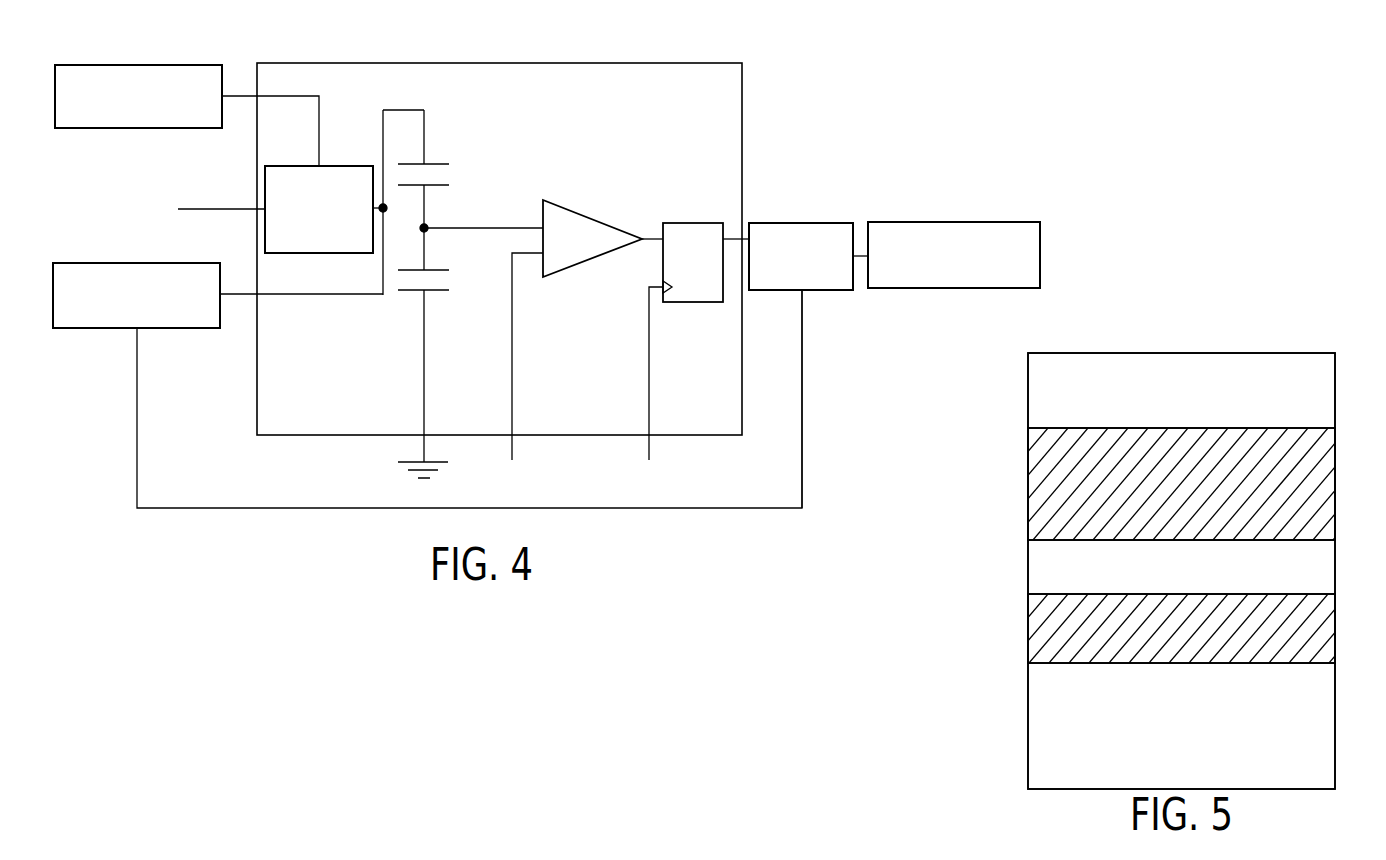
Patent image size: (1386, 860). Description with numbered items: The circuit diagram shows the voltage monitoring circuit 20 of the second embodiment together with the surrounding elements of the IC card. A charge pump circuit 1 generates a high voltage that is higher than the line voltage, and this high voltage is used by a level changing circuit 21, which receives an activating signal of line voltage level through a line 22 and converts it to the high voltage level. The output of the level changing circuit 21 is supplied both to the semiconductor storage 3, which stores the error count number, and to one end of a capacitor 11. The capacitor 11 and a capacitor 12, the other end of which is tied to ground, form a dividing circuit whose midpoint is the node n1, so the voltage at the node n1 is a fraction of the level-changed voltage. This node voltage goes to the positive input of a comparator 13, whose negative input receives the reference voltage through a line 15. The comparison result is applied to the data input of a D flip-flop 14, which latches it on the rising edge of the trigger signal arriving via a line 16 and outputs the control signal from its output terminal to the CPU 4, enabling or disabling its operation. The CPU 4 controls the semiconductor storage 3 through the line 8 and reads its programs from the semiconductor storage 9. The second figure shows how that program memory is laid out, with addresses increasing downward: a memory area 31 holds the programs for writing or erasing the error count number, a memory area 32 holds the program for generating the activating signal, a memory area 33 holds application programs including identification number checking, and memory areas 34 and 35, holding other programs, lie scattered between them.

In FIG. 4, the charge pump circuit 1 is at (165, 65).
In FIG. 4, the semiconductor storage 3 is at (137, 263).
In FIG. 4, the CPU 4 is at (783, 223).
In FIG. 4, the line 8 is at (802, 398).
In FIG. 4, the semiconductor storage for storing programs 9 is at (883, 222).
In FIG. 4, the capacitor 11 is at (449, 172).
In FIG. 4, the capacitor 12 is at (449, 280).
In FIG. 4, the comparator 13 is at (545, 200).
In FIG. 4, the D flip-flop 14 is at (690, 223).
In FIG. 4, the line 15 is at (512, 350).
In FIG. 4, the line 16 is at (649, 370).
In FIG. 4, the voltage monitoring circuit 20 is at (610, 63).
In FIG. 4, the level changing circuit 21 is at (352, 166).
In FIG. 4, the line 22 is at (205, 209).
In FIG. 4, the node n1 is at (430, 225).
In FIG. 5, the memory area 31 is at (1323, 393).
In FIG. 5, the memory area 32 is at (1323, 568).
In FIG. 5, the memory area 33 is at (1323, 745).
In FIG. 5, the memory area 34 is at (1040, 490).
In FIG. 5, the memory area 35 is at (1040, 640).